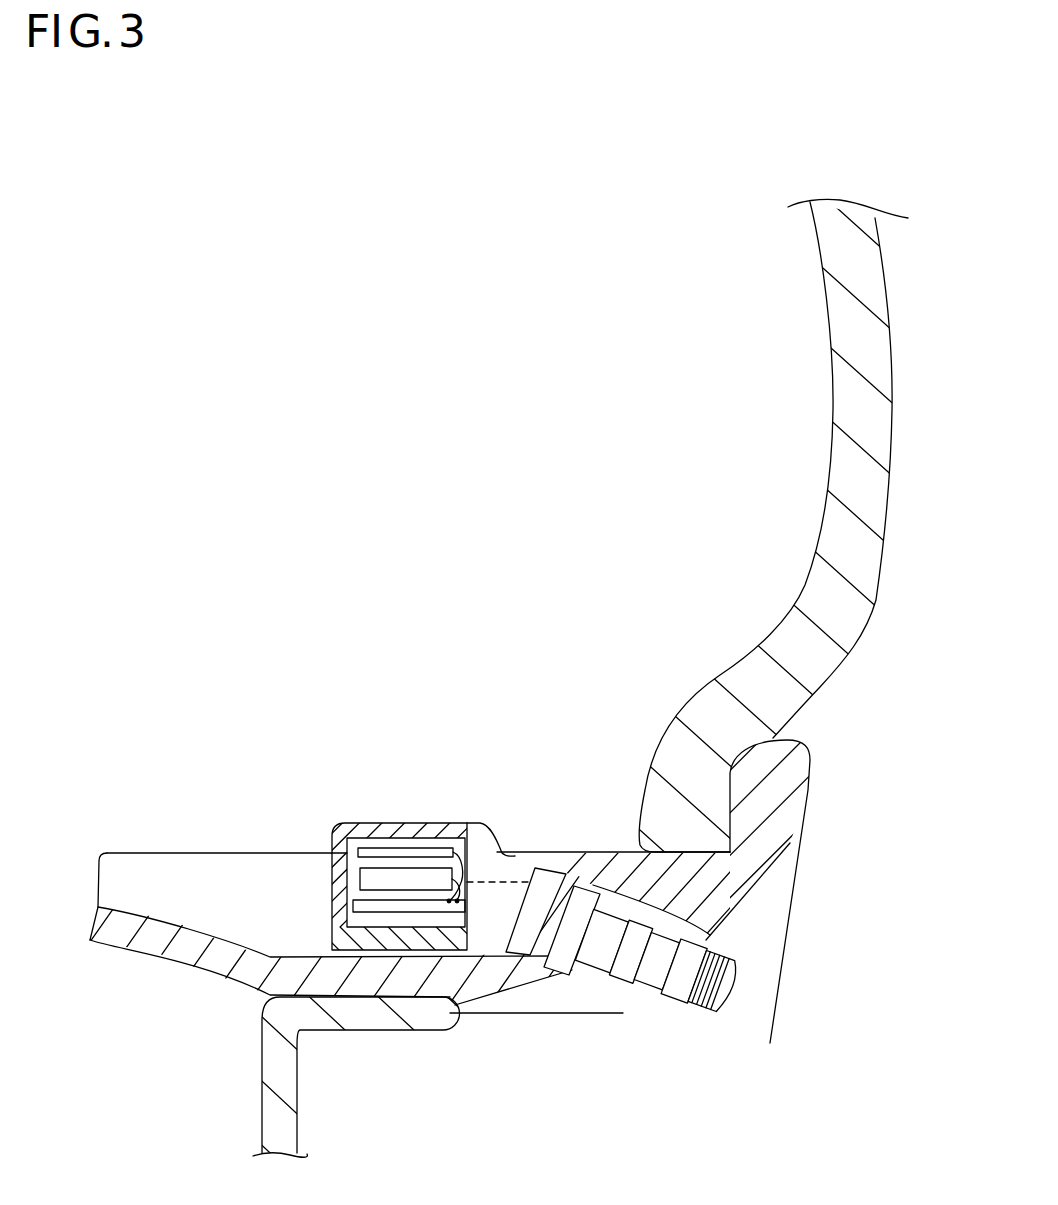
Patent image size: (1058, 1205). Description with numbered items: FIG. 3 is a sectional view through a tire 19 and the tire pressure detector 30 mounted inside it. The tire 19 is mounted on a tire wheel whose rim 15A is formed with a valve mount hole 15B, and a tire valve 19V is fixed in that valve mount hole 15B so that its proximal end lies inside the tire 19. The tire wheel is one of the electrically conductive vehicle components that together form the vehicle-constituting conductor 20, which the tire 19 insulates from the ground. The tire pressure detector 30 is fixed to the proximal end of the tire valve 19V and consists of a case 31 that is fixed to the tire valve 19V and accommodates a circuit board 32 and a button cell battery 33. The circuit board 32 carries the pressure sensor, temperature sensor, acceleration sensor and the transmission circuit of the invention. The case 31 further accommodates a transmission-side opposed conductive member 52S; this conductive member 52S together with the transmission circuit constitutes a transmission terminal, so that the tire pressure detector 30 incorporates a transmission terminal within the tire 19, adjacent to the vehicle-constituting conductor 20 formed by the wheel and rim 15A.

The tire 19 is at (816, 663).
The rim 15A is at (480, 998).
The valve mount hole 15B is at (557, 885).
The tire valve 19V is at (660, 992).
The vehicle-constituting conductor 20 is at (258, 1114).
The tire pressure detector 30 is at (529, 602).
The case 31 is at (387, 833).
The circuit board 32 is at (337, 900).
The button cell battery 33 is at (335, 853).
The transmission-side opposed conductive member 52S is at (422, 847).